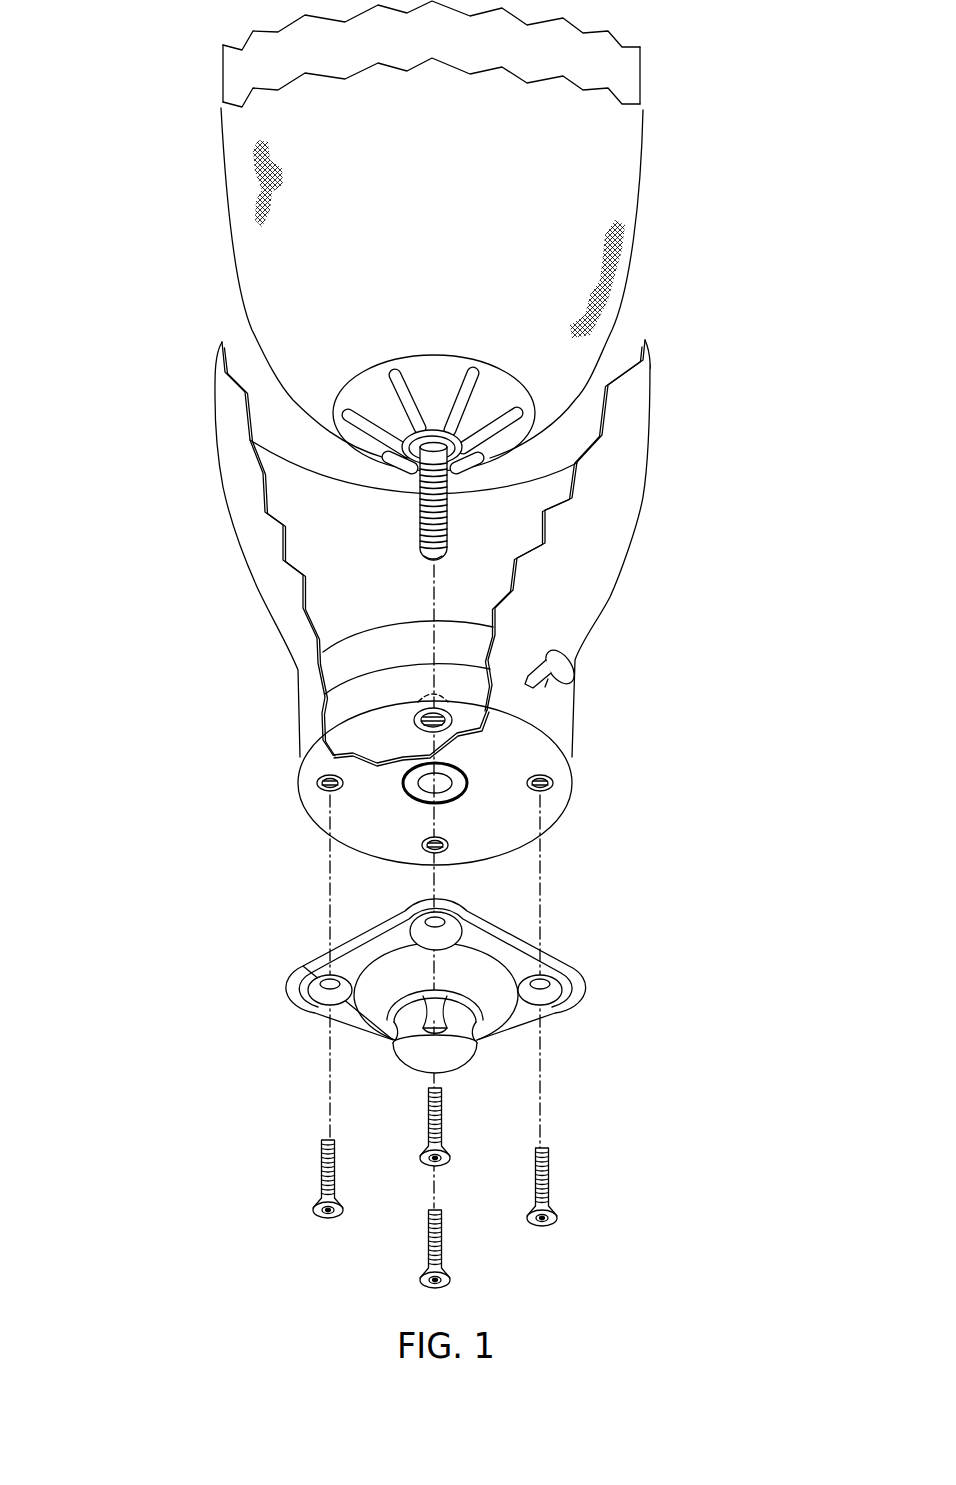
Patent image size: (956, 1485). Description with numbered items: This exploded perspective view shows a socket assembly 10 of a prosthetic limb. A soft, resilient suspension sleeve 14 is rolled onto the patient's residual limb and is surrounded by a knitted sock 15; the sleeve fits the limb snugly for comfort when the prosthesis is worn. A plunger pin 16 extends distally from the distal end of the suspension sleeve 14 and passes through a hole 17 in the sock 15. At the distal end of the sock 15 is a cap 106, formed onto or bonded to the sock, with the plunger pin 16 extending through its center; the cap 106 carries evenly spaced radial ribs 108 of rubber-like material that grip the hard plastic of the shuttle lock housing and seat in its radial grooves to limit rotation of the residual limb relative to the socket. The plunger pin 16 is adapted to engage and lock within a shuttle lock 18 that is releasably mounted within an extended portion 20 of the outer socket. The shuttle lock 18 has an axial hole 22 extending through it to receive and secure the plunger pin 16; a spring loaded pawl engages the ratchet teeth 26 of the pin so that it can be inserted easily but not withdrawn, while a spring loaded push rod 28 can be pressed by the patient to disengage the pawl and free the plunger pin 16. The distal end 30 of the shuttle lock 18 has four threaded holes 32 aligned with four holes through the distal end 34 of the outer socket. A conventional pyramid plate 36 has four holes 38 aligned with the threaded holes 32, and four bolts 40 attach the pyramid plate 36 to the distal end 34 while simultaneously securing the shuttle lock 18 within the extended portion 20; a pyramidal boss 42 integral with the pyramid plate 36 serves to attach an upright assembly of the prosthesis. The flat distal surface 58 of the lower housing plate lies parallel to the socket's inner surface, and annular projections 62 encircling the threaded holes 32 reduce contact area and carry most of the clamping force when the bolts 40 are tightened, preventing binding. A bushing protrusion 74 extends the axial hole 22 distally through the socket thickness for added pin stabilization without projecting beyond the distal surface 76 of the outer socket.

The socket assembly 10 is at (178, 639).
The suspension sleeve 14 is at (222, 65).
The knitted sock 15 is at (228, 206).
The plunger pin 16 is at (438, 560).
The hole 17 is at (427, 428).
The shuttle lock 18 is at (330, 668).
The extended portion 20 is at (630, 716).
The axial hole 22 is at (430, 687).
The teeth 26 is at (447, 535).
The push rod 28 is at (573, 670).
The distal end 30 is at (373, 747).
The threaded holes 32 is at (417, 727).
The distal end 34 is at (555, 817).
The pyramid plate 36 is at (553, 920).
The holes 38 is at (480, 917).
The bolts 40 is at (428, 1105).
The pyramidal boss 42 is at (455, 1060).
The distal surface 58 is at (365, 743).
The annular projections 62 is at (460, 733).
The protrusion 74 is at (457, 795).
The distal surface 76 is at (323, 812).
The cap 106 is at (367, 452).
The radial ribs 108 is at (347, 403).